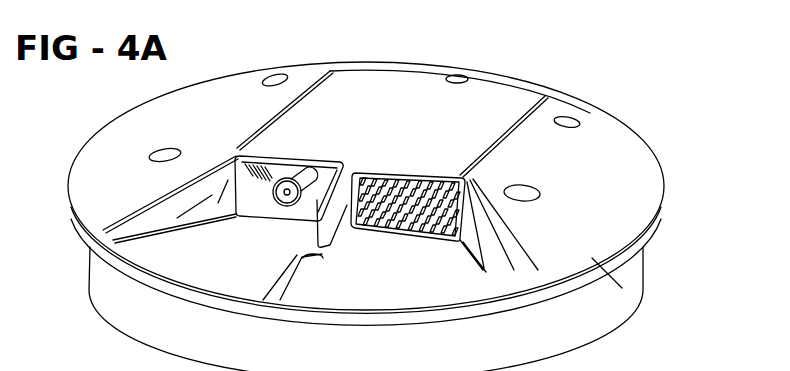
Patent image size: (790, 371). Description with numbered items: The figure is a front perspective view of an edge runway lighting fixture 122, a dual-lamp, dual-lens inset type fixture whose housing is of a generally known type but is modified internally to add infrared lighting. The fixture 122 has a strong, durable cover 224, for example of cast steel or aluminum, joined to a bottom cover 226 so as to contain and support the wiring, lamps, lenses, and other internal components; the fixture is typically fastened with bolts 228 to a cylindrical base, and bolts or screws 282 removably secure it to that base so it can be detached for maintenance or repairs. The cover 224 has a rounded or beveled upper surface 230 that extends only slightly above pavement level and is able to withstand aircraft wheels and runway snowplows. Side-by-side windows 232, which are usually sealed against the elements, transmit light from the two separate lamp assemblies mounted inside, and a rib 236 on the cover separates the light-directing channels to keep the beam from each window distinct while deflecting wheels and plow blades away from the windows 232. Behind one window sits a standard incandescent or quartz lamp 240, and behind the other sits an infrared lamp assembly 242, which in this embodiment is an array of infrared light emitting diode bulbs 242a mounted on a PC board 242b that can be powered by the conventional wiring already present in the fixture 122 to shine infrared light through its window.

The edge runway lighting fixture 122 is at (648, 90).
The cover 224 is at (648, 167).
The bottom cover 226 is at (618, 279).
The bolts 228 is at (535, 198).
The upper surface 230 is at (468, 100).
The windows 232 is at (278, 168).
The rib 236 is at (333, 231).
The incandescent lamp 240 is at (276, 198).
The infrared lamp assembly 242 is at (421, 248).
The LED bulbs 242a is at (433, 186).
The PC board 242b is at (350, 186).
The bolts or screws 282 is at (455, 75).